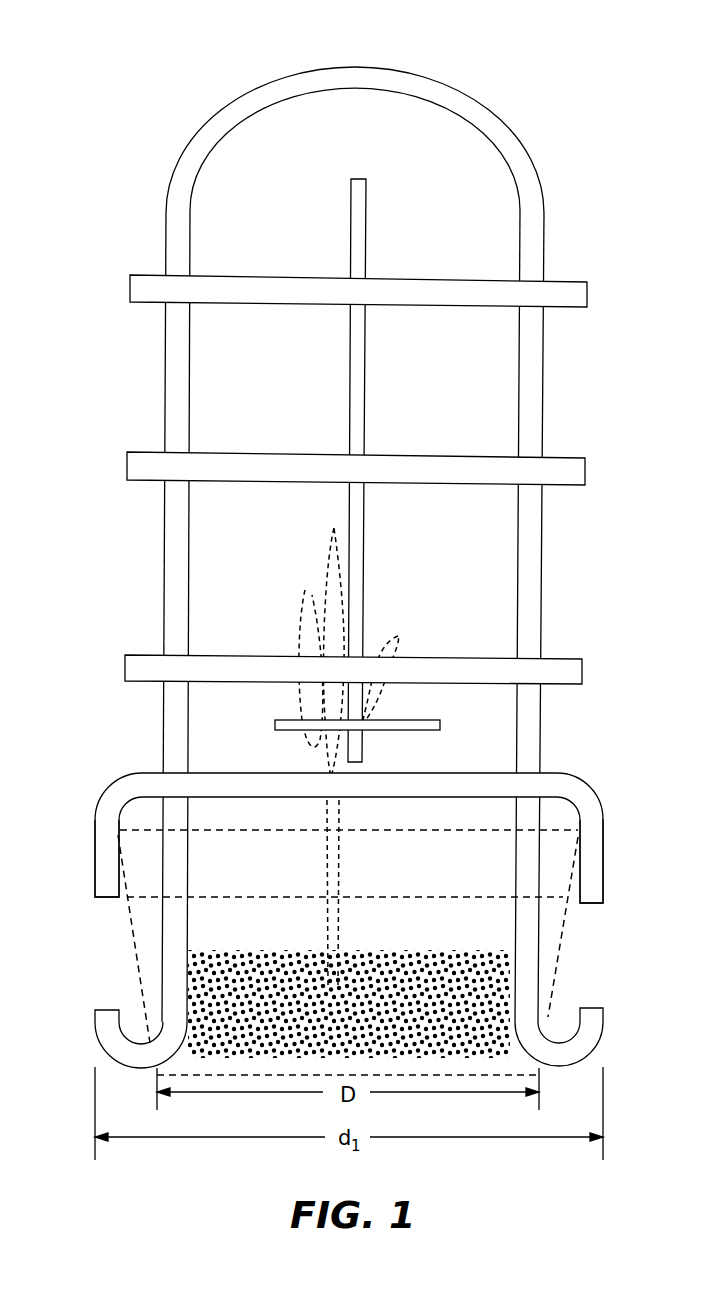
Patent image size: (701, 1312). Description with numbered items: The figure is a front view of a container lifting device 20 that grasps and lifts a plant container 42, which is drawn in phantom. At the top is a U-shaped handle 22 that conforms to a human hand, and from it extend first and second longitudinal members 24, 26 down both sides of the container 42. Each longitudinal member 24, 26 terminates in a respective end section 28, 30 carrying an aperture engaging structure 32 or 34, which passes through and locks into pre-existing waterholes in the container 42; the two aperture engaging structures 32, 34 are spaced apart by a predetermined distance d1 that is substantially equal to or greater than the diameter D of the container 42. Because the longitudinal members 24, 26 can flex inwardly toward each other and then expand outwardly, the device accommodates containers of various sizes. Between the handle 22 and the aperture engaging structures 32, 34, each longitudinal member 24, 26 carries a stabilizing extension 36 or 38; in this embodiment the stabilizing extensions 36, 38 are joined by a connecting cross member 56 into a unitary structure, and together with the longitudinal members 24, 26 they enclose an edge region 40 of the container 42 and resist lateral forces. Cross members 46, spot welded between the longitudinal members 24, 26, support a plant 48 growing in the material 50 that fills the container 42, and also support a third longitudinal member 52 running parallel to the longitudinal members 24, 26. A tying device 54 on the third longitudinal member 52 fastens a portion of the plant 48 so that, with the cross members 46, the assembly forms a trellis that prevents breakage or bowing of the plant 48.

The container lifting device 20 is at (376, 525).
The U-shaped handle 22 is at (367, 78).
The first longitudinal member 24 is at (176, 558).
The second longitudinal member 26 is at (535, 556).
The end section 28 is at (113, 963).
The end section 30 is at (568, 993).
The aperture engaging structure 32 is at (112, 1015).
The aperture engaging structure 34 is at (593, 1020).
The stabilizing extension 36 is at (597, 873).
The stabilizing extension 38 is at (103, 872).
The edge region 40 is at (477, 850).
The container 42 is at (560, 942).
The cross members 46 is at (580, 291).
The plant 48 is at (310, 629).
The material 50 is at (385, 953).
The third longitudinal member 52 is at (360, 403).
The tying device 54 is at (410, 720).
The connecting cross member 56 is at (433, 778).